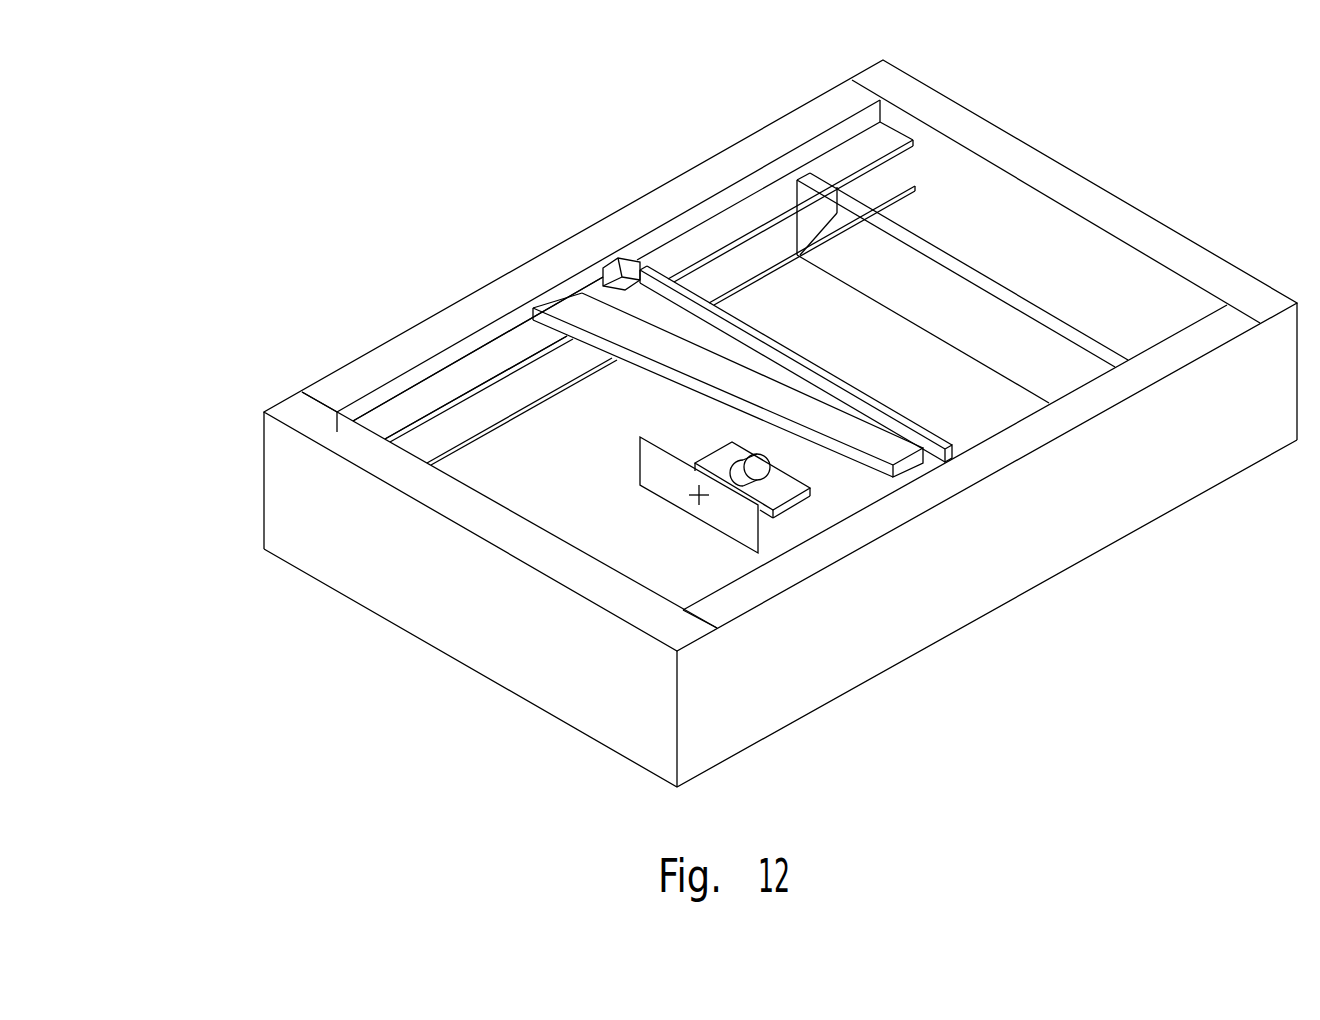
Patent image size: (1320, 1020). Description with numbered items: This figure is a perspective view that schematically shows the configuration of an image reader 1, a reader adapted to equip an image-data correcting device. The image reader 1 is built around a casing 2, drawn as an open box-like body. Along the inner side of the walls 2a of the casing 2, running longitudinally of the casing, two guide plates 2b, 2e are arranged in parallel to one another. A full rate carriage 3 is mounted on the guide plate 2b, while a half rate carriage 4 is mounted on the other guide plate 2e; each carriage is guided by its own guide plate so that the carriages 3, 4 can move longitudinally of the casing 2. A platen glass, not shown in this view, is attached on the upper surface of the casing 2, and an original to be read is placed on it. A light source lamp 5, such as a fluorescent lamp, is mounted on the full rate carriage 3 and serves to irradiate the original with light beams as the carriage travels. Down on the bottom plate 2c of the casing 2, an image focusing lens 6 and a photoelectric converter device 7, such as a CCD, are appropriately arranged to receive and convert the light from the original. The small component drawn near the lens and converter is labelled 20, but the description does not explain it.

The image reader 1 is at (567, 180).
The casing 2 is at (755, 140).
The walls 2a is at (493, 287).
The guide plate 2b is at (407, 410).
The bottom plate 2c is at (520, 490).
The guide plate 2e is at (473, 417).
The full rate carriage 3 is at (905, 462).
The half rate carriage 4 is at (1087, 357).
The light source lamp 5 is at (948, 455).
The image focusing lens 6 is at (773, 480).
The photoelectric converter device 7 is at (677, 488).
The holder card 20 is at (628, 470).